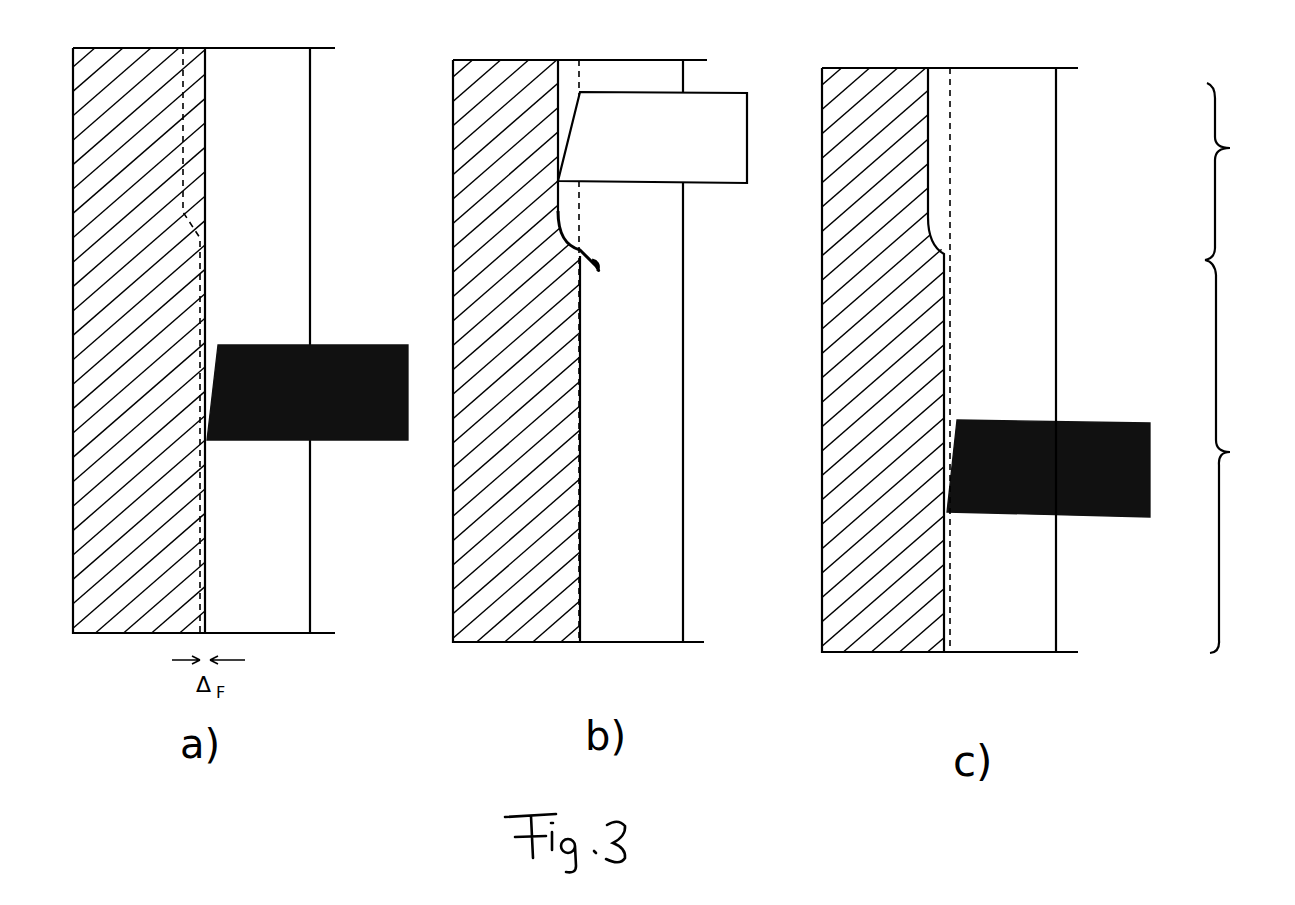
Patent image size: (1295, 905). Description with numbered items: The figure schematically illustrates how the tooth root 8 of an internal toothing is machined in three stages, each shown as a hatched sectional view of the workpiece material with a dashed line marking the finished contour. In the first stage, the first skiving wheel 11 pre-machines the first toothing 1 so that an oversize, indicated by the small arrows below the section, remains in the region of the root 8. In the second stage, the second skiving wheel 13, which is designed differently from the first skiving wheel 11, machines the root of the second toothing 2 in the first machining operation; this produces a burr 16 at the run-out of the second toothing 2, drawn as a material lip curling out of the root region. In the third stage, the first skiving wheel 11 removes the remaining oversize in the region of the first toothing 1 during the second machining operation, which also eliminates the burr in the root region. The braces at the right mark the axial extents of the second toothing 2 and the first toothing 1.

The first toothing 1 is at (1236, 456).
The second toothing 2 is at (1236, 171).
The tooth root 8 is at (562, 321).
The first skiving wheel 11 is at (252, 440).
The second skiving wheel 13 is at (608, 182).
The burr 16 is at (612, 263).